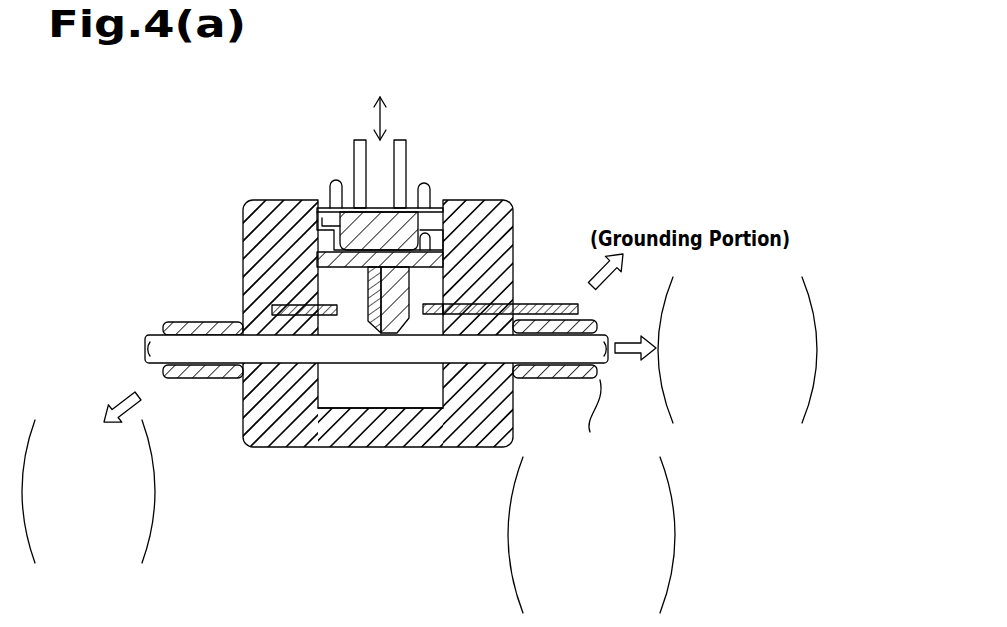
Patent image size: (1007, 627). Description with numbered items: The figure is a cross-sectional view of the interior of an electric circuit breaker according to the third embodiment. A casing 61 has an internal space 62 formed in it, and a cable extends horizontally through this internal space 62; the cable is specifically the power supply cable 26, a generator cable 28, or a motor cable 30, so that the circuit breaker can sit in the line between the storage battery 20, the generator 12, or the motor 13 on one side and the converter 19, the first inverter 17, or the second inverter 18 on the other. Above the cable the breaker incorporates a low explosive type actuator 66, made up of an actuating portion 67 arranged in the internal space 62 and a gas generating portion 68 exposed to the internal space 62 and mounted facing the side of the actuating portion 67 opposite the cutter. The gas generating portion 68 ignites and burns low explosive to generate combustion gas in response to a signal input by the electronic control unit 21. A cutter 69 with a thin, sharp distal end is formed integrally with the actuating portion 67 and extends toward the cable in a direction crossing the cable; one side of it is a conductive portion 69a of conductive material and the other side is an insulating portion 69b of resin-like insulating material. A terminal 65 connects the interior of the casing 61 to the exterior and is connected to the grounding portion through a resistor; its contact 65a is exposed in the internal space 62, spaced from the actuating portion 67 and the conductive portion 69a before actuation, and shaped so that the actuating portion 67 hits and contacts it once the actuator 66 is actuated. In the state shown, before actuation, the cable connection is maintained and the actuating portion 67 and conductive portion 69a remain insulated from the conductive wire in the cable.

The casing 61 is at (243, 248).
The internal space 62 is at (326, 407).
The terminal 65 is at (543, 303).
The contact 65a is at (290, 305).
The low explosive type actuator 66 is at (395, 332).
The actuating portion 67 is at (432, 236).
The gas generating portion 68 is at (350, 208).
The cutter 69 is at (408, 396).
The conductive portion 69a is at (405, 335).
The insulating portion 69b is at (373, 334).
The electronic control unit 21 is at (378, 105).
The storage battery 20 is at (88, 477).
The generator 12 is at (88, 477).
The motor 13 is at (88, 477).
The converter 19 is at (737, 350).
The first inverter 17 is at (737, 350).
The second inverter 18 is at (737, 350).
The power supply cable 26 is at (410, 466).
The generator cable 28 is at (593, 529).
The motor cable 30 is at (593, 529).